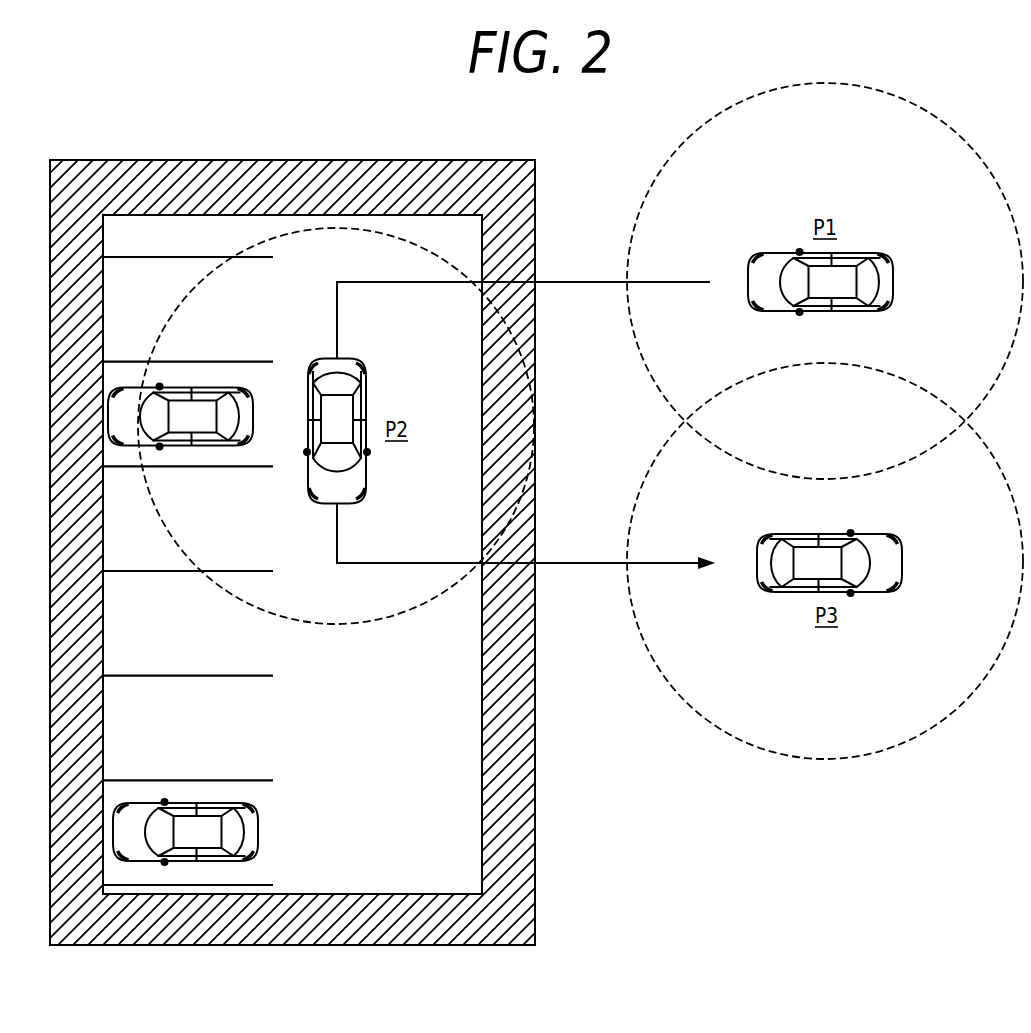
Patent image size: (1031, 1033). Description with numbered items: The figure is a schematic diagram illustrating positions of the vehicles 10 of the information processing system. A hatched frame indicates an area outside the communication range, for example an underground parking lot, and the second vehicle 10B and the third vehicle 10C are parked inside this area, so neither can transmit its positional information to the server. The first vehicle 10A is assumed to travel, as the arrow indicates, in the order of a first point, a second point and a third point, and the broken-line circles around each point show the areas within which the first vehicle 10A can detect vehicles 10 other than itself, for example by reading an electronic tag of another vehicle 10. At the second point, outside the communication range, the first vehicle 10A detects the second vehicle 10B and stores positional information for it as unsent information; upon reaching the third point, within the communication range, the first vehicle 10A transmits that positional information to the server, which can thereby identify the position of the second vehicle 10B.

The vehicle 10 is at (549, 541).
The first vehicle 10A is at (349, 382).
The second vehicle 10B is at (202, 406).
The third vehicle 10C is at (202, 823).